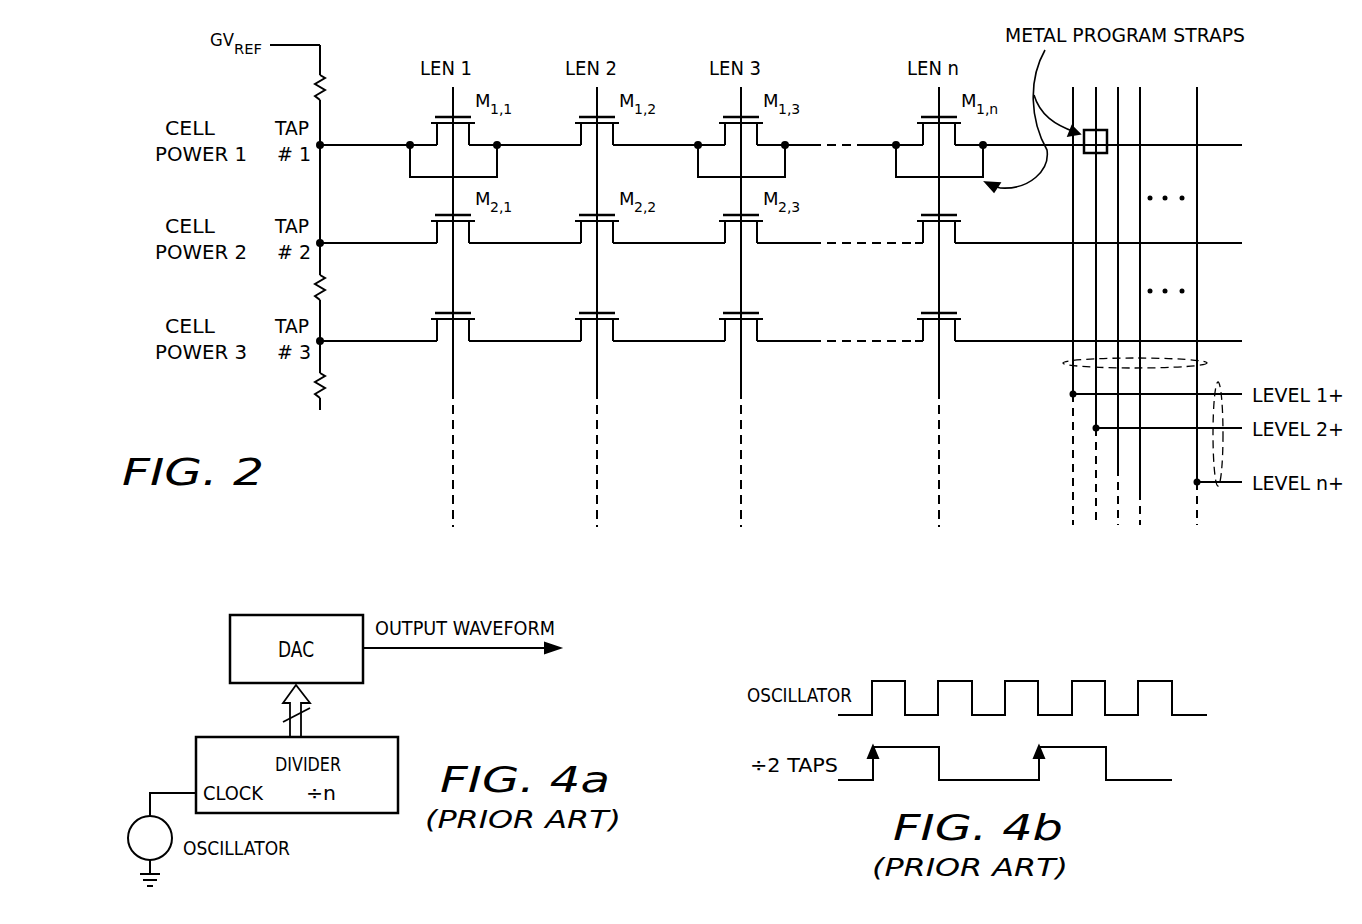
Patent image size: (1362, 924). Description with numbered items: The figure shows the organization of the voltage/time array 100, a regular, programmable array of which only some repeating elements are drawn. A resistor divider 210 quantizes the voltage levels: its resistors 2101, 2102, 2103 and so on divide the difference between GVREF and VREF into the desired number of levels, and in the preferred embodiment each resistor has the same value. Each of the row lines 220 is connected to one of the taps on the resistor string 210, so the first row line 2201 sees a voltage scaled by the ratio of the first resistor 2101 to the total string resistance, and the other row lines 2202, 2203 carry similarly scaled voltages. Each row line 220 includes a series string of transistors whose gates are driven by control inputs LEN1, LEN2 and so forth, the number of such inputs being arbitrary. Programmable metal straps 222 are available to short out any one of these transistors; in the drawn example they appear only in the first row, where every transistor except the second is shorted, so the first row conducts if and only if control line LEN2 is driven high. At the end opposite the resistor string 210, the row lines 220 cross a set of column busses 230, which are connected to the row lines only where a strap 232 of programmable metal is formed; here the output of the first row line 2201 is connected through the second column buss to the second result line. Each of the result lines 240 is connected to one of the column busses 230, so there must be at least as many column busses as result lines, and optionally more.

The voltage/time array 100 is at (355, 458).
The resistor divider 210 is at (287, 248).
The first resistor 2101 is at (315, 187).
The second resistor 2102 is at (315, 284).
The third resistor 2103 is at (315, 390).
The row lines 220 is at (779, 222).
The first row line 2201 is at (353, 145).
The second row line 2202 is at (353, 243).
The third row line 2203 is at (353, 341).
The programmable metal straps 222 is at (497, 165).
The column busses 230 is at (1063, 363).
The strap of programmable metal 232 is at (1108, 140).
The result lines 240 is at (1220, 488).